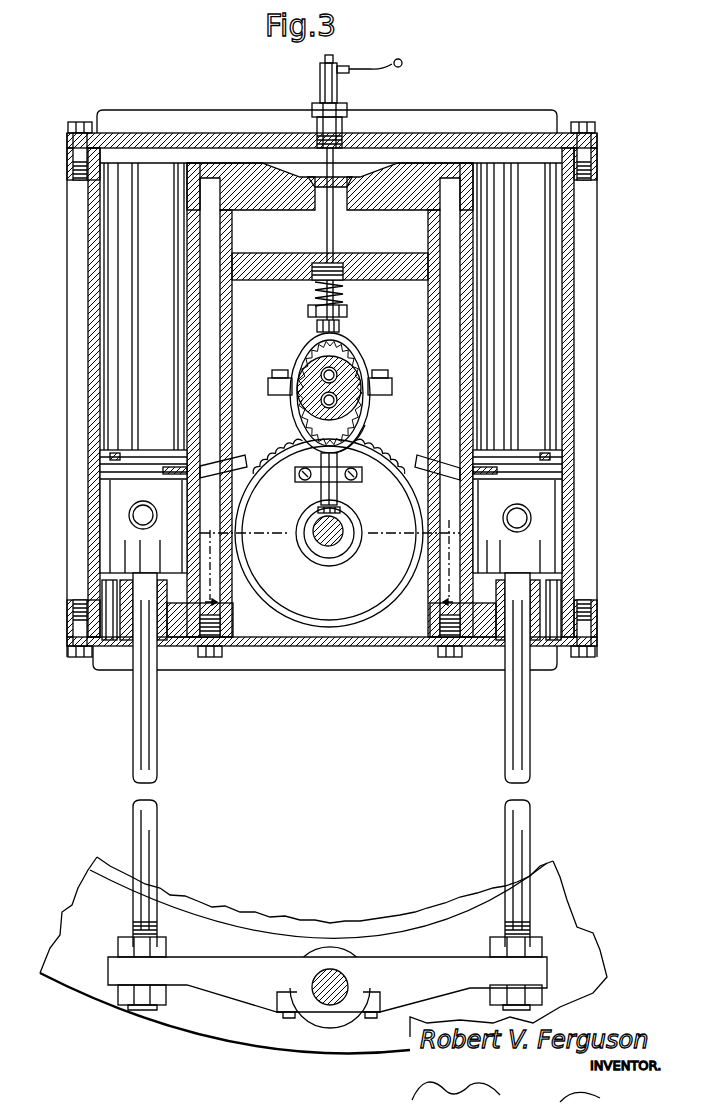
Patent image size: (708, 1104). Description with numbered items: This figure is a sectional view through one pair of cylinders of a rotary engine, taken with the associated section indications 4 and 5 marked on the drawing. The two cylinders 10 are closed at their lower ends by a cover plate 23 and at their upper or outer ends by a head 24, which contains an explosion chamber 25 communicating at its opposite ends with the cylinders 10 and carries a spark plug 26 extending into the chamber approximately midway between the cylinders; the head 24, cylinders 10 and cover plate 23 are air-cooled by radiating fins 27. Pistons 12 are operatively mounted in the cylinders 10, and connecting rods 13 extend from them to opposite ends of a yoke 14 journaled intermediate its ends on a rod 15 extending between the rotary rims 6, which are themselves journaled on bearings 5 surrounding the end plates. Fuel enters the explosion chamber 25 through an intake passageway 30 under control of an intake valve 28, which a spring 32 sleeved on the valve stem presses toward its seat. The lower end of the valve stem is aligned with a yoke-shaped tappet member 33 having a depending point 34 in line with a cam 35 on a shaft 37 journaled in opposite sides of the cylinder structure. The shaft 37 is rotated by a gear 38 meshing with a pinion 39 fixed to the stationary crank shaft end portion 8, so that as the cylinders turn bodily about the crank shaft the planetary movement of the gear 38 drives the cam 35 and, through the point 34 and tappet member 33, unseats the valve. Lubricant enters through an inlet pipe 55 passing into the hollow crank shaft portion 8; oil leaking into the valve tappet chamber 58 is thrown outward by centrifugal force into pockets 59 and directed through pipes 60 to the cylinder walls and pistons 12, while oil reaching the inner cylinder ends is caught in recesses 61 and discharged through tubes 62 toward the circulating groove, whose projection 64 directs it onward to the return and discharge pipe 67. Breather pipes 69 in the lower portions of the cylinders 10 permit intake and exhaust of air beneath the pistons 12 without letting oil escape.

The section line 4- 4 is at (80, 570).
The bearings 5 is at (314, 43).
The rims 6 is at (580, 927).
The crank shaft end portions 8 is at (350, 376).
The cylinders 10 is at (574, 228).
The pistons 12 is at (113, 483).
The connecting rods 13 is at (147, 755).
The yoke 14 is at (223, 990).
The rod 15 is at (330, 1003).
The cover plate 23 is at (370, 653).
The head 24 is at (272, 133).
The explosion chamber 25 is at (388, 152).
The spark plug 26 is at (320, 82).
The radiating fins 27 is at (560, 117).
The intake valve 28 is at (340, 165).
The intake passageway 30 is at (268, 215).
The springs 32 is at (345, 292).
The tappet members 33 is at (362, 413).
The points 34 is at (340, 490).
The cam 35 is at (308, 540).
The shaft 37 is at (345, 533).
The gear 38 is at (278, 444).
The pinion 39 is at (357, 345).
The inlet pipe 55 is at (320, 400).
The valve tappet chamber 58 is at (282, 650).
The pockets 59 is at (280, 453).
The pipes 60 is at (209, 472).
The recesses 61 is at (175, 657).
The tubes 62 is at (235, 650).
The projection 64 is at (398, 57).
The discharge pipe 67 is at (322, 380).
The breather pipes 69 is at (108, 592).